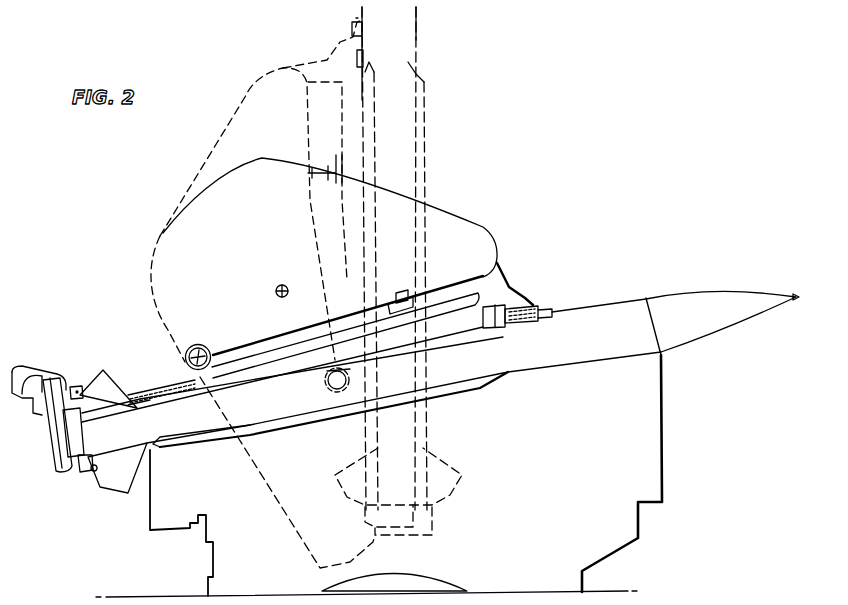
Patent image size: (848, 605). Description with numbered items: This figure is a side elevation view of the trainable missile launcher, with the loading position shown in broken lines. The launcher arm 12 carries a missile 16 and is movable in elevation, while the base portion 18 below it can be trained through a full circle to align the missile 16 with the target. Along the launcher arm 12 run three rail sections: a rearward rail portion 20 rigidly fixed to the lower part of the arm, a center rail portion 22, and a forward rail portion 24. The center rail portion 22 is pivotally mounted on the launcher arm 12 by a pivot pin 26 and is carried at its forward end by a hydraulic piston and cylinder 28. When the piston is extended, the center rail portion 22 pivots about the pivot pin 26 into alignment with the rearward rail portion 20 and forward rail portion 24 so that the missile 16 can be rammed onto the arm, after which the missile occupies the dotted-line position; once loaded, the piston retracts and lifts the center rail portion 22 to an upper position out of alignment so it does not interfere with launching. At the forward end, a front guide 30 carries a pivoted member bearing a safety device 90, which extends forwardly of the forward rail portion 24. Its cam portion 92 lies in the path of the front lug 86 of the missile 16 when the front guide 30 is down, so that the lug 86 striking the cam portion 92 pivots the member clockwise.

The launcher arm 12 is at (245, 97).
The missile 16 is at (684, 293).
The base portion 18 is at (664, 447).
The rearward rail portion 20 is at (145, 382).
The center rail portion 22 is at (447, 303).
The forward rail portion 24 is at (533, 305).
The pivot pin 26 is at (203, 346).
The hydraulic piston and cylinder 28 is at (392, 296).
The front guide 30 is at (508, 268).
The front lug 86 is at (517, 328).
The safety device 90 is at (551, 308).
The cam portion 92 is at (552, 318).